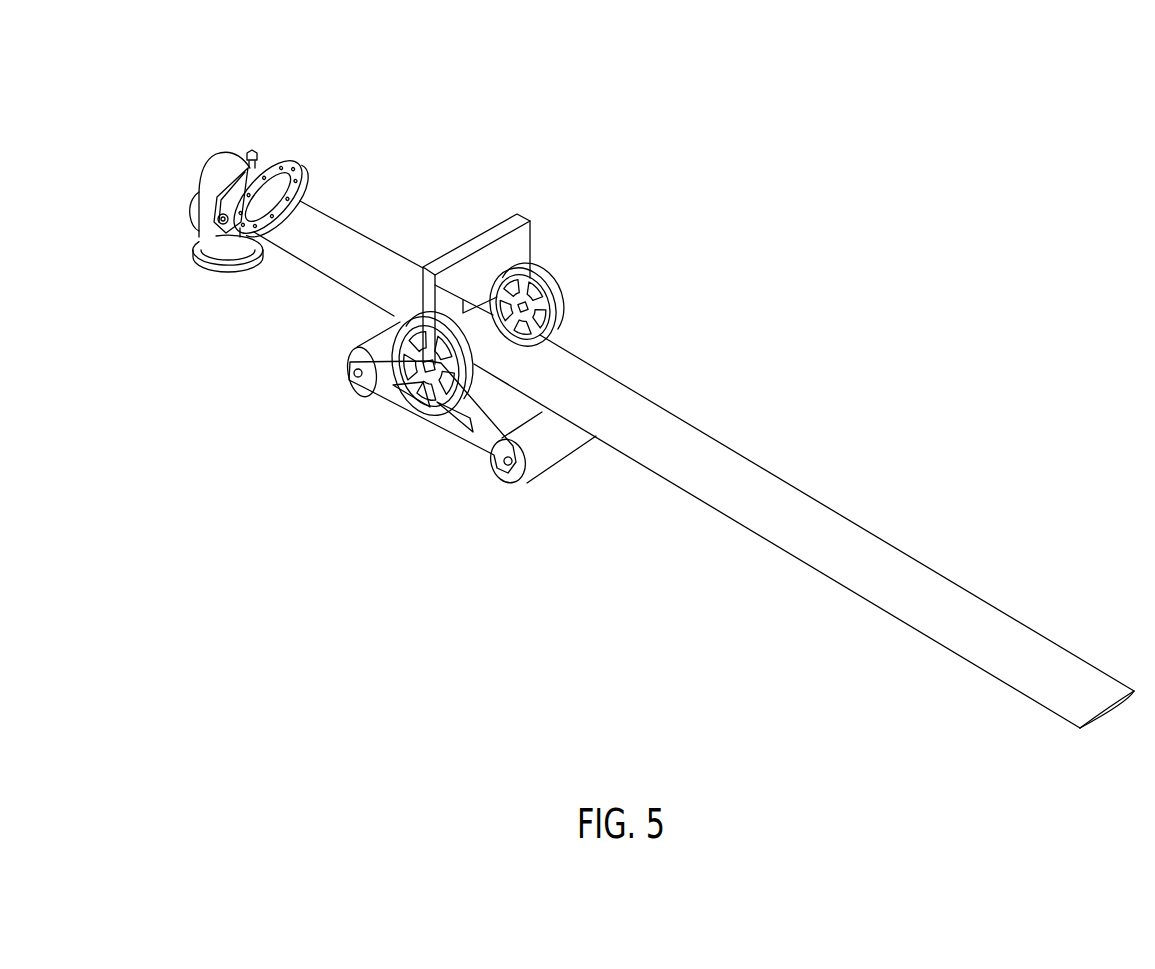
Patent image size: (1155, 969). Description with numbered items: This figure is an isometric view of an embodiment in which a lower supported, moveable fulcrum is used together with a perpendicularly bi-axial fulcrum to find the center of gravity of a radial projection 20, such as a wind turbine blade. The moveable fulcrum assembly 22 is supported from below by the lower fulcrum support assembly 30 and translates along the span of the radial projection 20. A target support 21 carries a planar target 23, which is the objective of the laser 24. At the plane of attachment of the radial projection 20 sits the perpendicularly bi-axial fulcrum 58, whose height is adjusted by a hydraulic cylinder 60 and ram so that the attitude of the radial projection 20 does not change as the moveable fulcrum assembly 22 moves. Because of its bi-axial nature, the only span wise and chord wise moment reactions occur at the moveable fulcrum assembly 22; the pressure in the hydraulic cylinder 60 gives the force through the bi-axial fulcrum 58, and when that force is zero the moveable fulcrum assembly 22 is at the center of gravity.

The radial projection 20 is at (850, 551).
The target support 21 is at (530, 247).
The moveable fulcrum assembly 22 is at (568, 320).
The planar target 23 is at (474, 268).
The laser 24 is at (257, 152).
The lower fulcrum support assembly 30 is at (448, 452).
The perpendicularly bi-axial fulcrum 58 is at (212, 152).
The hydraulic cylinder 60 is at (217, 240).